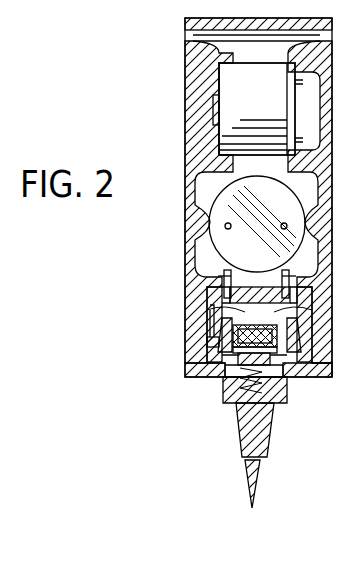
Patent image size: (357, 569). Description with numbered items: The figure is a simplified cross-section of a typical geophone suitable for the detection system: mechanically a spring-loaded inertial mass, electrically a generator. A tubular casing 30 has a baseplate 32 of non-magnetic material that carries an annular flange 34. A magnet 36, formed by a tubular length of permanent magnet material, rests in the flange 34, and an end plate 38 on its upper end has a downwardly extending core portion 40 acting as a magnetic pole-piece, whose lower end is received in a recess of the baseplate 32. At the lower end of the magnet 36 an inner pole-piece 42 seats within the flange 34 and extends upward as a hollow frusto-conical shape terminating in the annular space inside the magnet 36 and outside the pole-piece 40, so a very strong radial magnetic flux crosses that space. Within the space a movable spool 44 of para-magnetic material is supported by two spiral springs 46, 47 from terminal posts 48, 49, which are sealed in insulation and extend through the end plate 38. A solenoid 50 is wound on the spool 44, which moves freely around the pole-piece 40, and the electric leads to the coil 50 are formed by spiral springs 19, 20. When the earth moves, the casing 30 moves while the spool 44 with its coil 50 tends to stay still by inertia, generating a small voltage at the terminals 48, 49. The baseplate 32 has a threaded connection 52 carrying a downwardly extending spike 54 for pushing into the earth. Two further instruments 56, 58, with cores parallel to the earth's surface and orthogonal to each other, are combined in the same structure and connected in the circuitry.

The spiral spring 19 is at (222, 376).
The spiral spring 20 is at (283, 378).
The tubular casing 30 is at (185, 97).
The baseplate 32 is at (185, 370).
The annular flange 34 is at (210, 343).
The magnet 36 is at (212, 295).
The end plate 38 is at (305, 297).
The core portion 40 is at (232, 397).
The inner pole-piece 42 is at (225, 362).
The movable spool 44 is at (240, 337).
The spiral spring 46 is at (300, 318).
The spiral spring 47 is at (225, 320).
The terminal post 48 is at (224, 283).
The terminal post 49 is at (289, 283).
The solenoid 50 is at (325, 382).
The threaded connection 52 is at (241, 431).
The spike 54 is at (247, 463).
The instrument 56 is at (304, 193).
The instrument 58 is at (304, 108).